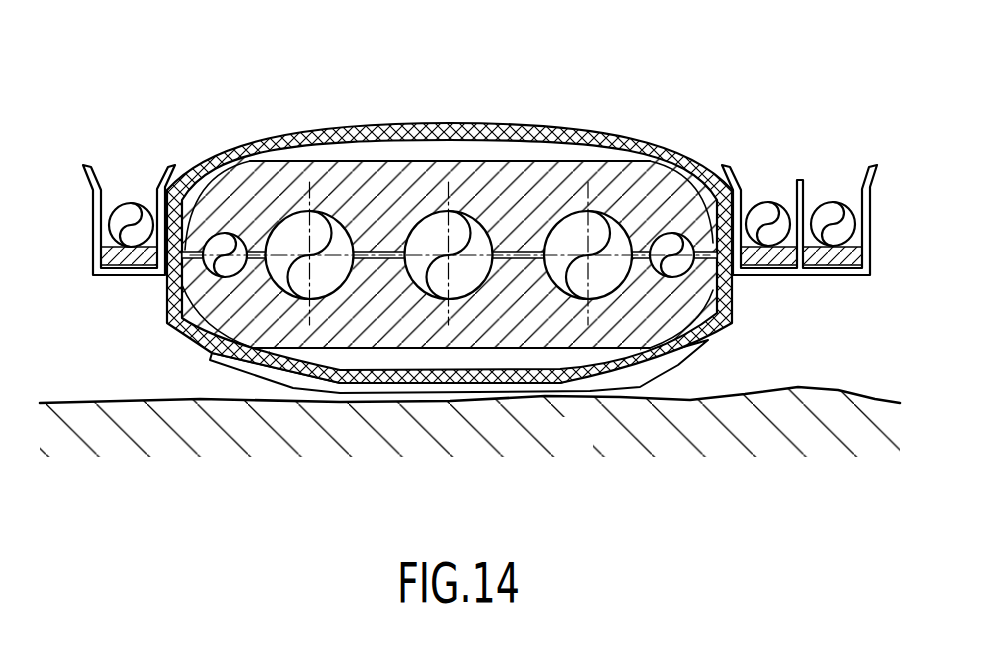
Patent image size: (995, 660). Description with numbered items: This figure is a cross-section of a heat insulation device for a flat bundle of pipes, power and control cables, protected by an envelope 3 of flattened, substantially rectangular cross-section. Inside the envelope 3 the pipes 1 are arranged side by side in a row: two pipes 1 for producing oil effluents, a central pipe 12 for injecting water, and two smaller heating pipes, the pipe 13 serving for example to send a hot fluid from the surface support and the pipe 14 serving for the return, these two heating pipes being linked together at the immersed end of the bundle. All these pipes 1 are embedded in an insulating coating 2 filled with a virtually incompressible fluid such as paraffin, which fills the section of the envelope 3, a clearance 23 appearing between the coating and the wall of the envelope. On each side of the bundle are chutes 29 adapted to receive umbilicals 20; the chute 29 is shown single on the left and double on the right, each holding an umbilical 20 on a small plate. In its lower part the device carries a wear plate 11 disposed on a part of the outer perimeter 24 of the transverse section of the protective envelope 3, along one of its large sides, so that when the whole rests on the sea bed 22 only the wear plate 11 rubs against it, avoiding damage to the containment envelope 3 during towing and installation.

The pipes 1 is at (663, 112).
The central pipe 12 is at (460, 270).
The heating pipe 13 is at (233, 267).
The return heating pipe 14 is at (677, 267).
The elastic core body 2 is at (540, 177).
The envelope 3 is at (449, 216).
The wear plate 11 is at (688, 360).
The umbilicals 20 is at (127, 212).
The sea bed 22 is at (589, 444).
The clearance gap 23 is at (423, 152).
The outer perimeter 24 is at (340, 114).
The chutes 29 is at (131, 280).